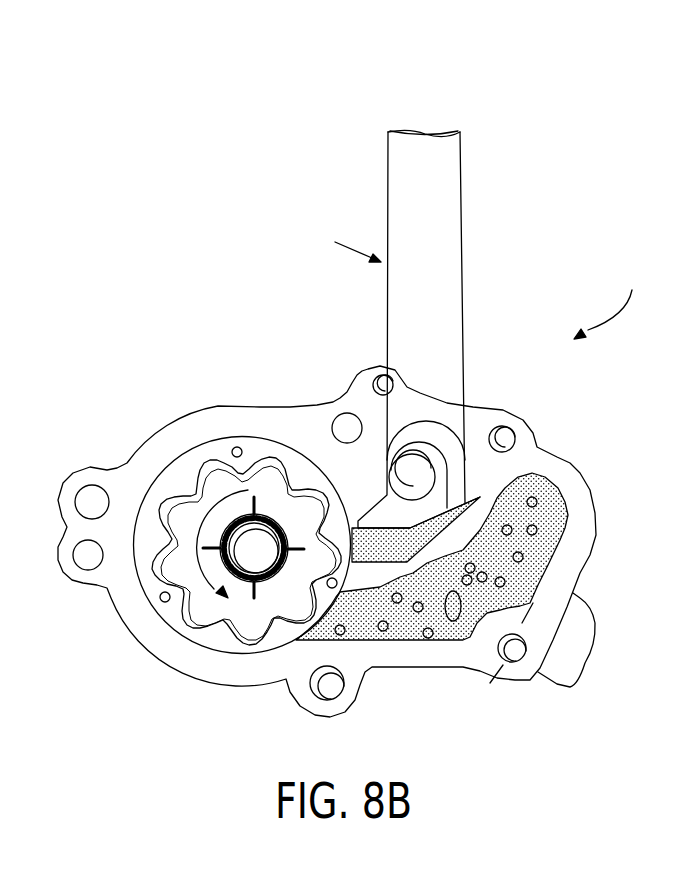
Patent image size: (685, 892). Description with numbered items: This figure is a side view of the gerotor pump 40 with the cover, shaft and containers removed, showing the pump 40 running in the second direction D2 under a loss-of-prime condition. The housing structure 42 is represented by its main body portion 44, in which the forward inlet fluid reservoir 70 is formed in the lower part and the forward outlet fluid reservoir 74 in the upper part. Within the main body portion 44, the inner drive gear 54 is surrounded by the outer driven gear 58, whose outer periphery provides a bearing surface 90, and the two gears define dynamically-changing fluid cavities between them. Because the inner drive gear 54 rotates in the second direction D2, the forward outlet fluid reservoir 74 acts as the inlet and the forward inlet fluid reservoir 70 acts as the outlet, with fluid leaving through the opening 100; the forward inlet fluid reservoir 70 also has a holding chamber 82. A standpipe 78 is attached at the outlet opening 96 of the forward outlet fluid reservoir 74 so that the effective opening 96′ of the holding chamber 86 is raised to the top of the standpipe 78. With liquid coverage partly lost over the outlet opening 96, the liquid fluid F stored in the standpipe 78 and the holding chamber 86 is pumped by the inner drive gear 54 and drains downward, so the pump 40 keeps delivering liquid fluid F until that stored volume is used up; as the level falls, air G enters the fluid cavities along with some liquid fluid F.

The pump 40 is at (608, 297).
The housing structure 42 is at (605, 466).
The main body portion 44 is at (574, 556).
The inner drive gear 54 is at (247, 630).
The outer driven gear 58 is at (155, 591).
The forward inlet fluid reservoir 70 is at (392, 655).
The forward outlet fluid reservoir 74 is at (340, 244).
The standpipe 78 is at (452, 188).
The holding chamber 82 is at (523, 588).
The holding chamber 86 is at (488, 443).
The bearing surface 90 is at (140, 554).
The outlet opening 96 is at (411, 478).
The effective opening 96′ is at (430, 130).
The opening 100 is at (557, 504).
The second direction D2 is at (212, 482).
The air G is at (452, 297).
The liquid fluid F is at (407, 562).